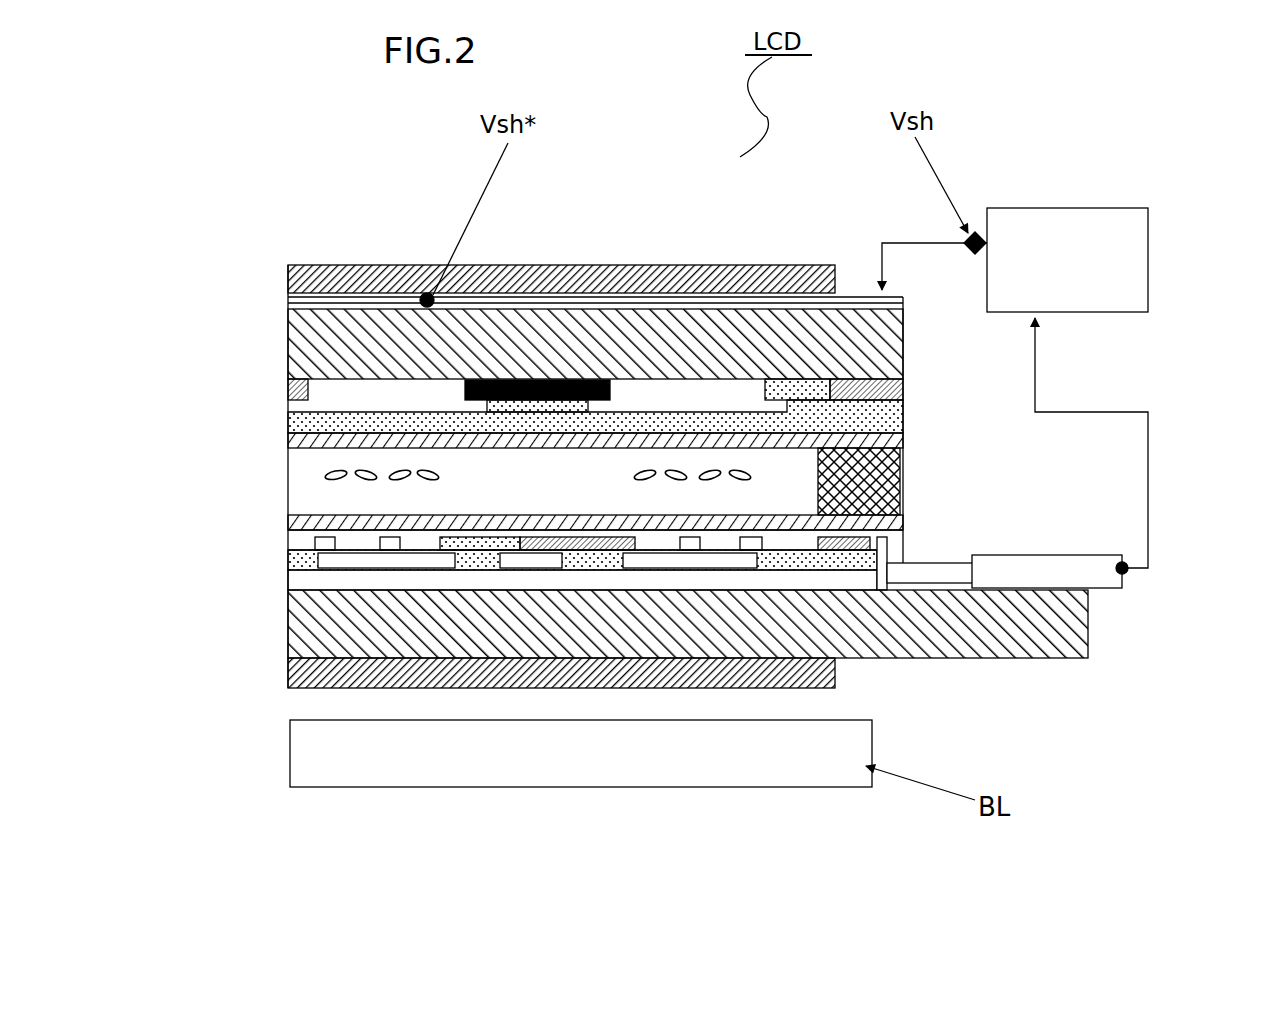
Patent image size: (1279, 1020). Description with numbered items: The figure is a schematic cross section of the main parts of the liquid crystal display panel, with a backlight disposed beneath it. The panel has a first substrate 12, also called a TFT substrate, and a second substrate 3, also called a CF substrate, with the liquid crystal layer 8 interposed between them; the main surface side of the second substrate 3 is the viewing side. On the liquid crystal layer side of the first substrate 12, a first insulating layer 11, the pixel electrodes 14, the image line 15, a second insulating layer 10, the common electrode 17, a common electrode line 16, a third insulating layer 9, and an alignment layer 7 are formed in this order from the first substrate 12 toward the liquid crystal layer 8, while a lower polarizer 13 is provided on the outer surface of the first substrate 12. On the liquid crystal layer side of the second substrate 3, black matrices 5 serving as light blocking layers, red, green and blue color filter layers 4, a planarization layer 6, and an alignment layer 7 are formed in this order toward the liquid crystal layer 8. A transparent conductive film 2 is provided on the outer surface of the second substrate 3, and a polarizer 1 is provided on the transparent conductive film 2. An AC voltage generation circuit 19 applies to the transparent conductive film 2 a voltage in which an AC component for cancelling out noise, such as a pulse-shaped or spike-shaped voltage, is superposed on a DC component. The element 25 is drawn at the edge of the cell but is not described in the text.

The polarizer 1 is at (320, 266).
The transparent conductive film 2 is at (380, 297).
The second substrate 3 is at (455, 333).
The color filter layers 4 is at (450, 385).
The black matrices 5 is at (589, 375).
The planarization layer 6 is at (306, 417).
The alignment layer 7 is at (302, 510).
The liquid crystal layer 8 is at (338, 479).
The third insulating layer 9 is at (313, 539).
The second insulating layer 10 is at (311, 566).
The first insulating layer 11 is at (335, 583).
The first substrate 12 is at (411, 632).
The lower polarizer 13 is at (462, 687).
The pixel electrodes 14 is at (438, 568).
The image line 15 is at (542, 570).
The common electrode line 16 is at (613, 551).
The common electrode 17 is at (691, 553).
The AC voltage generation circuit 19 is at (1152, 277).
The sealing material 25 is at (899, 487).